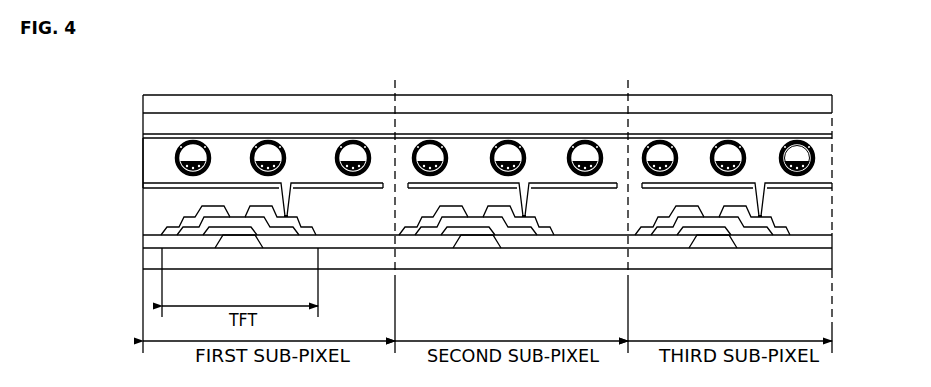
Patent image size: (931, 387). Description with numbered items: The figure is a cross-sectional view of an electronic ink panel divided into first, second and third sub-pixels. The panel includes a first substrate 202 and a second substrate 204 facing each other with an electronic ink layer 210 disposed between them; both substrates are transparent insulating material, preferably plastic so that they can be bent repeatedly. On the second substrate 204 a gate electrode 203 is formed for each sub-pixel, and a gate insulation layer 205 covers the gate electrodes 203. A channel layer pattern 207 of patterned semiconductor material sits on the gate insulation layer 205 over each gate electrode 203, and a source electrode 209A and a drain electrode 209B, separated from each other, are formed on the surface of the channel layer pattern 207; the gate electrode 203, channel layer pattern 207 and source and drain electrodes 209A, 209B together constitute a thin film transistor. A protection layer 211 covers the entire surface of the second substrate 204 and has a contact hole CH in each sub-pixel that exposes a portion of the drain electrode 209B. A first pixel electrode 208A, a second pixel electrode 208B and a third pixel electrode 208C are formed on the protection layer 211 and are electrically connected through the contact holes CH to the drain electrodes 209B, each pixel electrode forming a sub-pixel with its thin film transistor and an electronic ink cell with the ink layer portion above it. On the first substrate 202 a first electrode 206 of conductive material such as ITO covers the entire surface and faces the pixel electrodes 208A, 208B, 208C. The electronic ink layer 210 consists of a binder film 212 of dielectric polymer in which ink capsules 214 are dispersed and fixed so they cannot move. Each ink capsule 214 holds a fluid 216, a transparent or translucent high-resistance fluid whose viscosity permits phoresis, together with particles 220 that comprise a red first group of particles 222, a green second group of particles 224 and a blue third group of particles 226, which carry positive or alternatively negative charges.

The first substrate 202 is at (487, 103).
The first electrode 206 is at (143, 125).
The binder film 212 is at (557, 137).
The electronic ink layer 210 is at (143, 136).
The fluid 216 is at (353, 143).
The ink capsule 214 is at (430, 143).
The particles 220 is at (780, 161).
The first group of particles 222 is at (808, 172).
The second group of particles 224 is at (801, 160).
The third group of particles 226 is at (808, 144).
The first pixel electrode 208A is at (350, 189).
The second pixel electrode 208B is at (592, 190).
The third pixel electrode 208C is at (793, 189).
The contact hole CH is at (284, 181).
The protection layer 211 is at (143, 213).
The gate electrode 203 is at (239, 249).
The channel layer pattern 207 is at (478, 236).
The second substrate 204 is at (483, 247).
The source electrode 209A is at (410, 237).
The drain electrode 209B is at (547, 233).
The gate insulation layer 205 is at (143, 247).